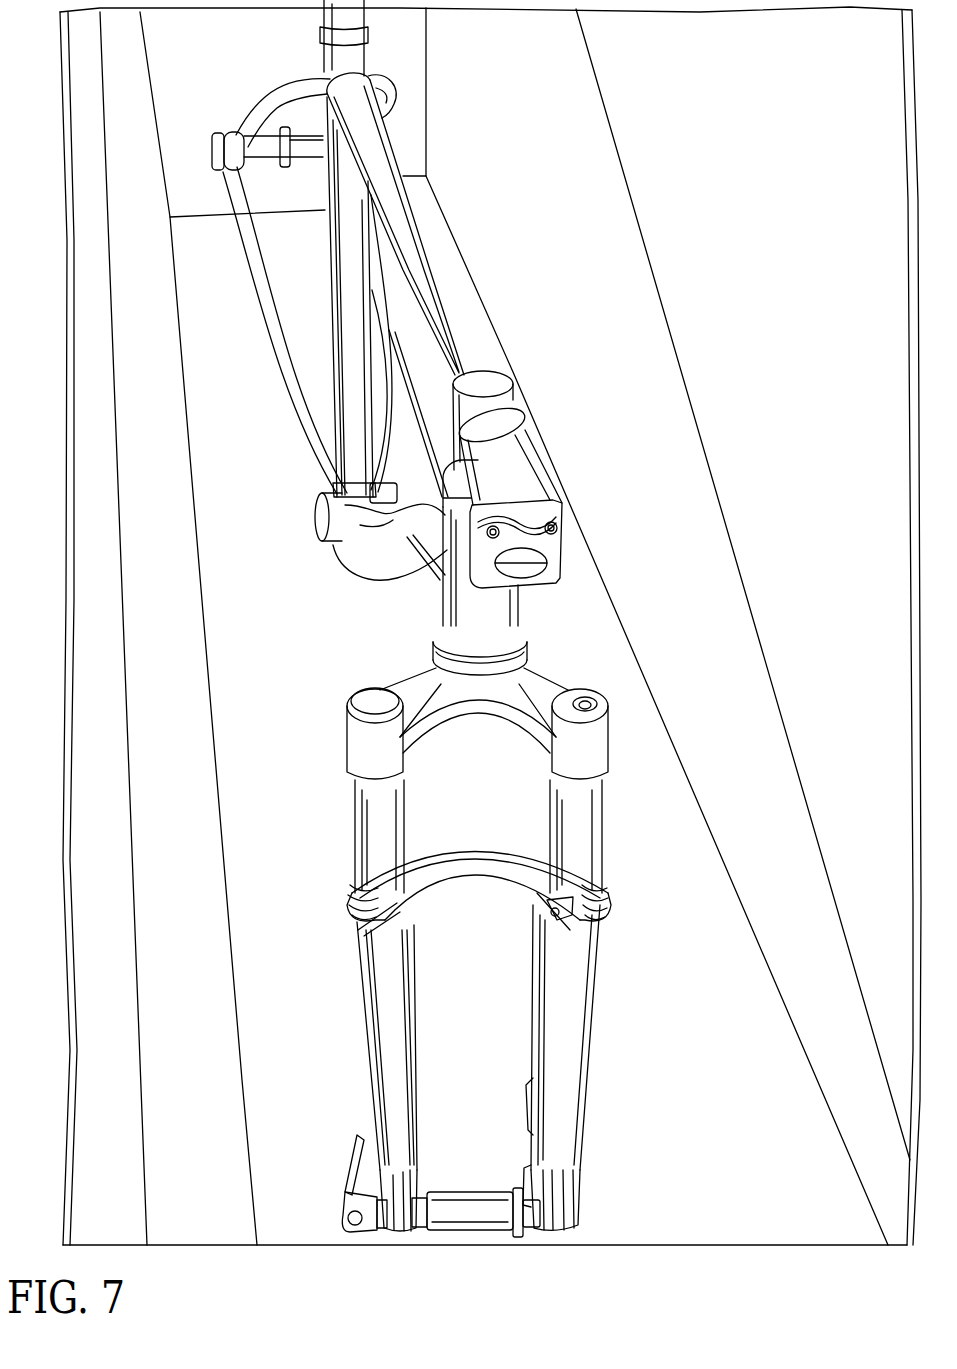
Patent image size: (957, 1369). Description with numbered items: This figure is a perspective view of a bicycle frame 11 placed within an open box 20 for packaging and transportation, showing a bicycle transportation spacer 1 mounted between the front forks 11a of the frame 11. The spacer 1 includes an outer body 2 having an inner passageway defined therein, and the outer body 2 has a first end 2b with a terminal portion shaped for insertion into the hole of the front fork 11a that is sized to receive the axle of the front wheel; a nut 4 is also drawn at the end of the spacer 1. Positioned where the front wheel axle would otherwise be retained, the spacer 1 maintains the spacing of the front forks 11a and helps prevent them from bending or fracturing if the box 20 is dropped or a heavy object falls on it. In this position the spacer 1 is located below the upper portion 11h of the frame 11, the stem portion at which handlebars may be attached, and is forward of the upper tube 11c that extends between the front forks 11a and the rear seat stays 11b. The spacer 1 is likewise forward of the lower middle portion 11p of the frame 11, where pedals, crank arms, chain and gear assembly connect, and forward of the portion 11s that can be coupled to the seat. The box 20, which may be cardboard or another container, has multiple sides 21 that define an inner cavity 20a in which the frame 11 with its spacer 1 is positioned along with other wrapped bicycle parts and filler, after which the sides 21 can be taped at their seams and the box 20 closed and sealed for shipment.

The spacer 1 is at (315, 167).
The outer body 2 is at (463, 1202).
The first end 2b is at (420, 1210).
The nut 4 is at (532, 1212).
The frame 11 is at (441, 224).
The front forks 11a is at (356, 998).
The rear seat stays 11b is at (247, 100).
The upper tube 11c is at (418, 263).
The upper portion 11h is at (517, 463).
The lower middle portion 11p is at (313, 523).
The seat portion 11s is at (357, 62).
The box 20 is at (158, 482).
The inner cavity 20a is at (544, 420).
The sides 21 is at (264, 48).